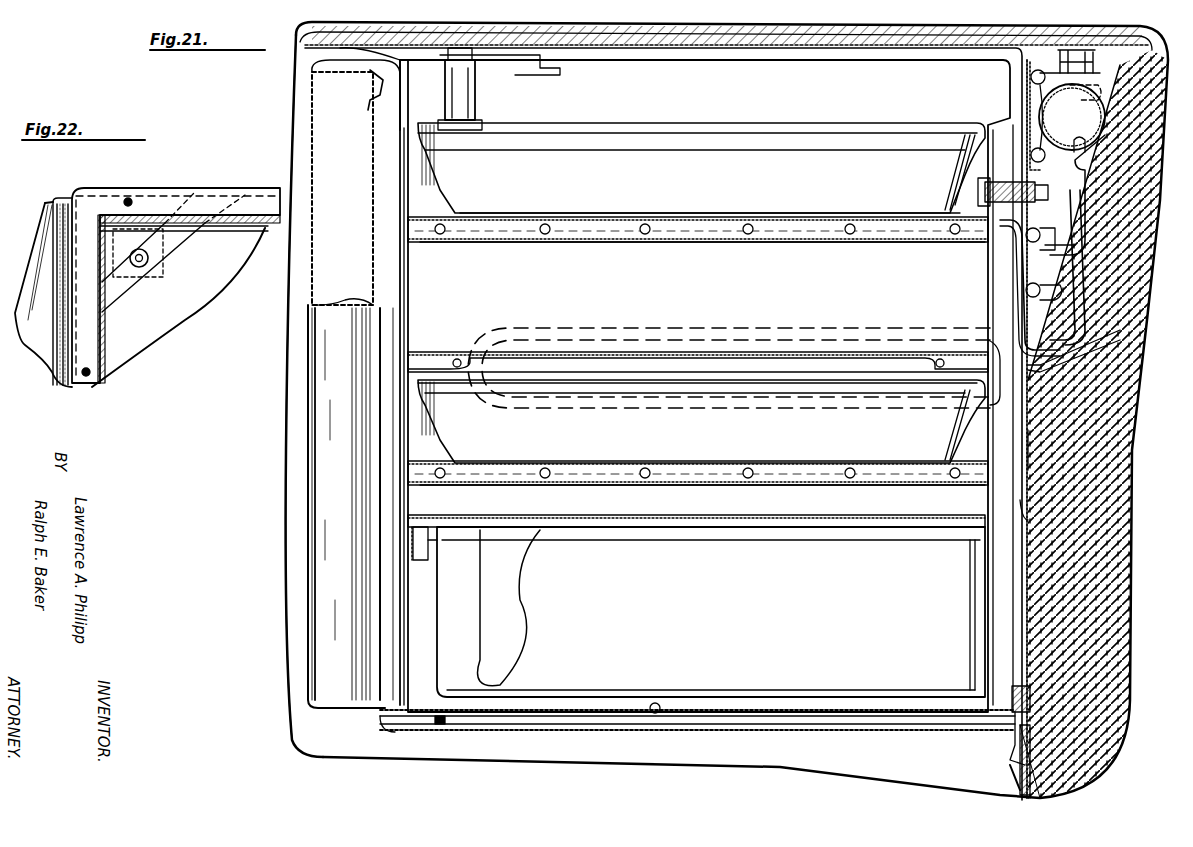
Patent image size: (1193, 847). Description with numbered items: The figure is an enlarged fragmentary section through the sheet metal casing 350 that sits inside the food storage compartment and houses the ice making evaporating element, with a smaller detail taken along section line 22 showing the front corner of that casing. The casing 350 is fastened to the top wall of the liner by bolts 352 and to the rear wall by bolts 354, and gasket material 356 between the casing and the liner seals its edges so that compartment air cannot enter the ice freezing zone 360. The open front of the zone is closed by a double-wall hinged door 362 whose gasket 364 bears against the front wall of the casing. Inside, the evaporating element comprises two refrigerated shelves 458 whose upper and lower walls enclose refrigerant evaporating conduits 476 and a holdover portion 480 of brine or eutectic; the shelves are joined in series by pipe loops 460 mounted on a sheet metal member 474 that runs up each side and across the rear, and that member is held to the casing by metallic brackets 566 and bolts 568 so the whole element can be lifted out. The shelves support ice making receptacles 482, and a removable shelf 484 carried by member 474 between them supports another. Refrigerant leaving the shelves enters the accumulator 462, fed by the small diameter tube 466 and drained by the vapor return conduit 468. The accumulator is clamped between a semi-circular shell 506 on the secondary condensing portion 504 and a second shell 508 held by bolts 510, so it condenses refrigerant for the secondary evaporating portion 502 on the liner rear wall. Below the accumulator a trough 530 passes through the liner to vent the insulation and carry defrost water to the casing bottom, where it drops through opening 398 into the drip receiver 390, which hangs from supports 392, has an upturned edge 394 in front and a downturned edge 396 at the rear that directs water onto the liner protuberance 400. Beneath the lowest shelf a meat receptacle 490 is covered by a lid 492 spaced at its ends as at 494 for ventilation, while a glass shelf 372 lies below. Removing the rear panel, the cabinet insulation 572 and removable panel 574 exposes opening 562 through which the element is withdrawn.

In FIG. 21, the section line 22— 22 is at (300, 53).
In FIG. 21, the sheet metal casing 350 is at (580, 716).
In FIG. 22, the sheet metal casing 350 is at (150, 188).
In FIG. 21, the bolts 352 is at (404, 70).
In FIG. 21, the bolts 354 is at (1012, 698).
In FIG. 21, the gasket material 356 is at (345, 50).
In FIG. 22, the gasket material 356 is at (245, 220).
In FIG. 21, the ice freezing zone 360 is at (405, 320).
In FIG. 21, the hinged door 362 is at (310, 462).
In FIG. 22, the hinged door 362 is at (36, 223).
In FIG. 21, the gasket 364 is at (355, 60).
In FIG. 22, the gasket 364 is at (62, 205).
In FIG. 21, the shelf 372 is at (715, 48).
In FIG. 21, the drip receiver 390 is at (750, 733).
In FIG. 21, the supports 392 is at (440, 727).
In FIG. 21, the upturned edge 394 is at (385, 732).
In FIG. 21, the downturned edge 396 is at (1040, 735).
In FIG. 21, the opening 398 is at (655, 713).
In FIG. 21, the protuberance 400 is at (1015, 770).
In FIG. 21, the refrigerated shelves 458 is at (725, 243).
In FIG. 21, the pipe loops (return bends) 460 is at (665, 328).
In FIG. 21, the refrigerant accumulator 462 is at (1055, 130).
In FIG. 21, the small diameter tube (capillary tube) 466 is at (1078, 280).
In FIG. 21, the vapor return conduit 468 is at (1105, 108).
In FIG. 21, the sheet metal member 474 is at (988, 298).
In FIG. 22, the sheet metal member 474 is at (240, 236).
In FIG. 21, the refrigerant evaporating conduits 476 is at (658, 243).
In FIG. 21, the holdover portion 480 is at (780, 243).
In FIG. 21, the ice making receptacles 482 is at (735, 165).
In FIG. 21, the removable shelf 484 is at (535, 350).
In FIG. 21, the receptacle 490 is at (530, 672).
In FIG. 21, the lid 492 is at (510, 520).
In FIG. 21, the spacing 494 is at (455, 527).
In FIG. 21, the evaporating portion 502 is at (1040, 233).
In FIG. 21, the condensing portion 504 is at (1030, 77).
In FIG. 21, the semi-circular shell 506 is at (1028, 100).
In FIG. 21, the semi-circular shell 508 is at (1120, 140).
In FIG. 21, the bolts 510 is at (1095, 65).
In FIG. 21, the trough 530 is at (1090, 335).
In FIG. 21, the opening 562 is at (1065, 310).
In FIG. 21, the metallic brackets 566 is at (498, 72).
In FIG. 22, the metallic brackets 566 is at (180, 245).
In FIG. 21, the bolts 568 is at (478, 95).
In FIG. 22, the bolts 568 is at (145, 266).
In FIG. 21, the cabinet insulation 572 is at (1030, 475).
In FIG. 21, the removable panel 574 is at (1040, 497).